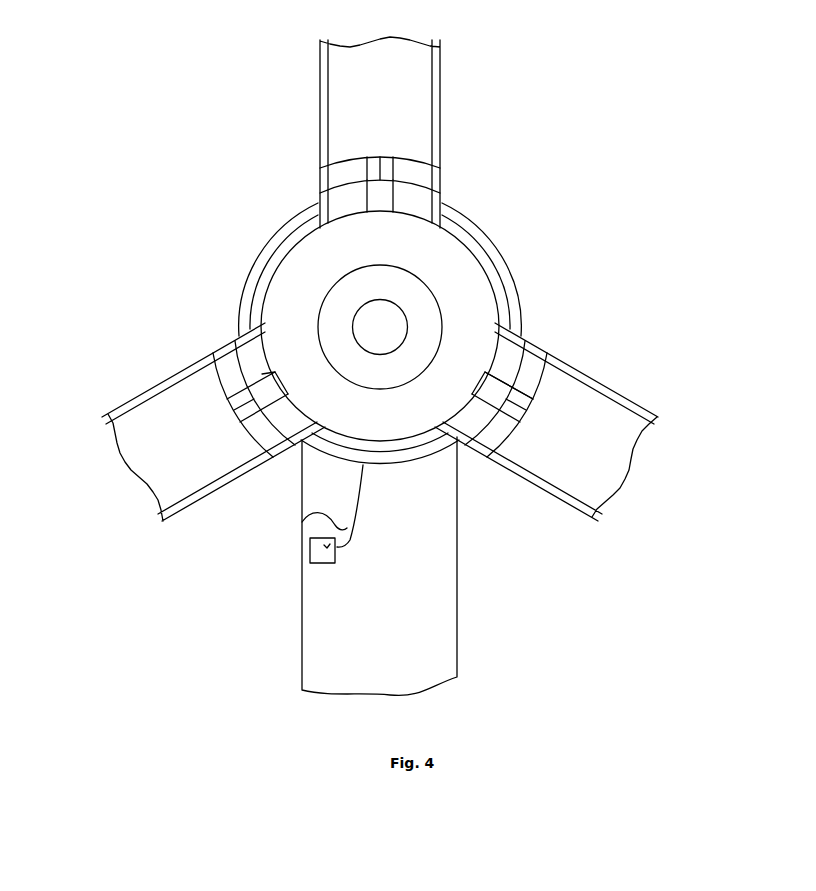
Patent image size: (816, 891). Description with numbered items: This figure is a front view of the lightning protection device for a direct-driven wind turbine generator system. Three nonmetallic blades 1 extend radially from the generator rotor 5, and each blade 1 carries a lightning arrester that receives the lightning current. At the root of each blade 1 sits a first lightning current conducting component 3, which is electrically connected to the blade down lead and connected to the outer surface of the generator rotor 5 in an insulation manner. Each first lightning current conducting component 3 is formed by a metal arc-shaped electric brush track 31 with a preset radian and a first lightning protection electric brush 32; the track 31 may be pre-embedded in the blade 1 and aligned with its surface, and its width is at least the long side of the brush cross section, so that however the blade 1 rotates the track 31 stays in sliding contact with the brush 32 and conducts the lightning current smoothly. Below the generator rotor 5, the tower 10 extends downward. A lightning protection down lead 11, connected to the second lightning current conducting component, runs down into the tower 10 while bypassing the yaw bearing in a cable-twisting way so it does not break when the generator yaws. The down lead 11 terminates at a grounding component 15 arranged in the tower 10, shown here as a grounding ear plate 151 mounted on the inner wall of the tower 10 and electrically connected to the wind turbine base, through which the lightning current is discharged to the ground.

The nonmetallic blade 1 is at (433, 70).
The first lightning current conducting component 3 is at (391, 289).
The arc-shaped electric brush track 31 is at (430, 183).
The first lightning protection electric brush 32 is at (410, 152).
The generator rotor 5 is at (503, 246).
The tower 10 is at (337, 650).
The lightning protection down lead 11 is at (302, 522).
The grounding component 15 is at (231, 561).
The grounding ear plate 151 is at (310, 552).